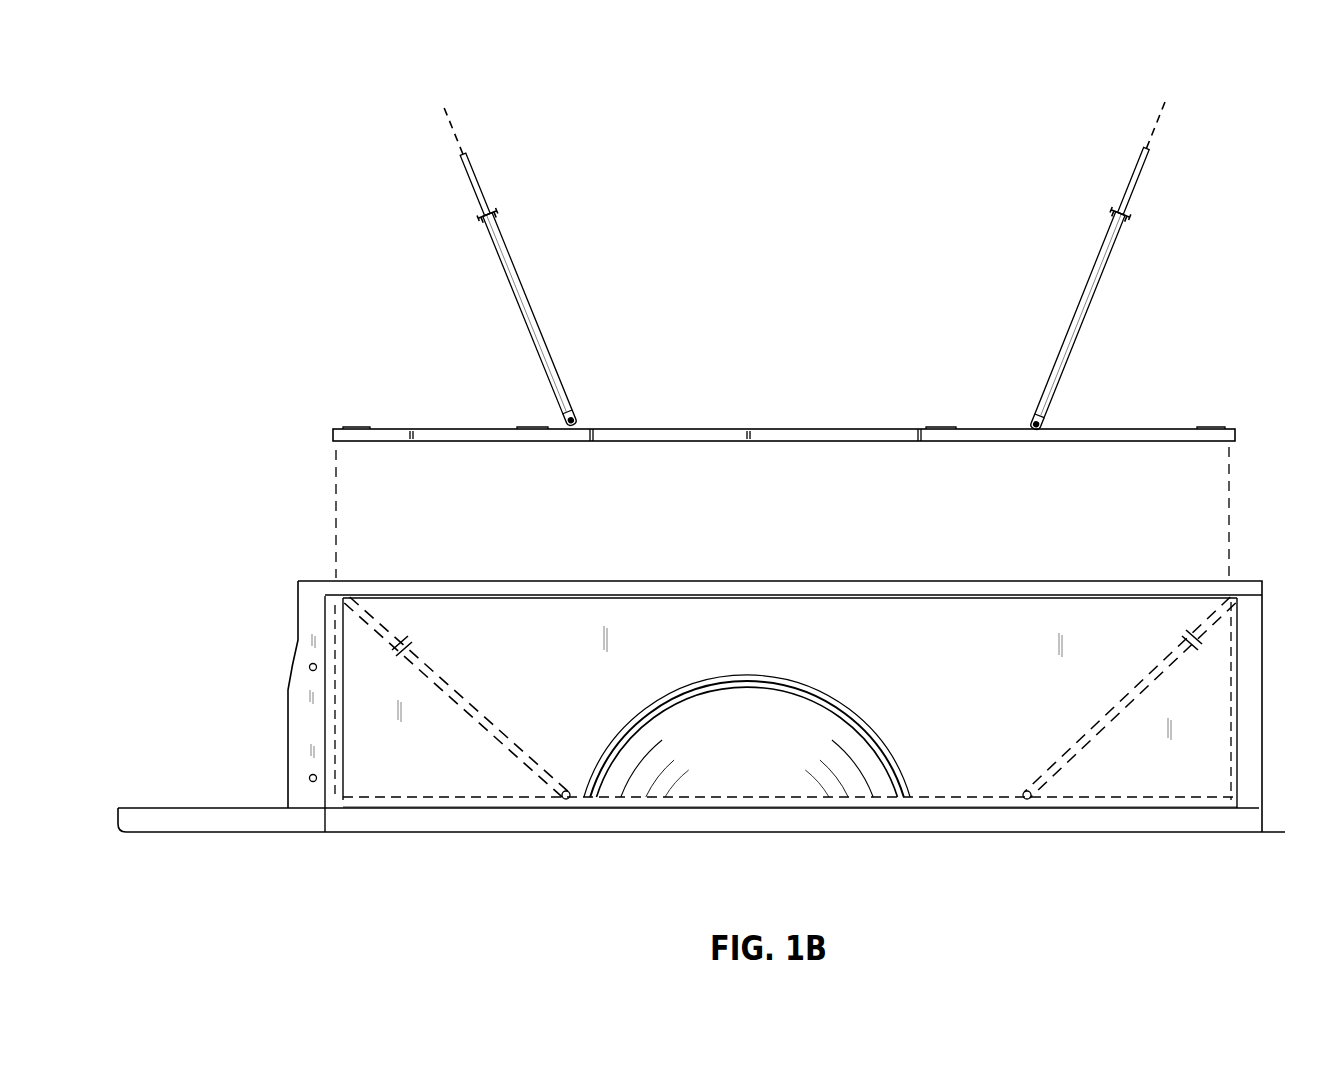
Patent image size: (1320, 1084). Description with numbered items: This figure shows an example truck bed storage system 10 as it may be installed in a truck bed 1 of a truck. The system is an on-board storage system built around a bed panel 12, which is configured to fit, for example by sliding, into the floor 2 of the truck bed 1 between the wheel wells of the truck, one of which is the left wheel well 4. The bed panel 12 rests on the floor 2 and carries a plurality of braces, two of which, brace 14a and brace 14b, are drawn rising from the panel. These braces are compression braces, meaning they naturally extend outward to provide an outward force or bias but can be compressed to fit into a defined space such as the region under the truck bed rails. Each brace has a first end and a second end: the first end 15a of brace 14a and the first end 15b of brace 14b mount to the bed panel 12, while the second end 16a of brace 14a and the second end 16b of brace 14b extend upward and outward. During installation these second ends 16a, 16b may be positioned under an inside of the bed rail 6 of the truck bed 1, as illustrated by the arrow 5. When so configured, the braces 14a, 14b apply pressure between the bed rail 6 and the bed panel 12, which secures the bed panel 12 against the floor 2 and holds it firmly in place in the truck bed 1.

The truck bed 1 is at (312, 478).
The floor 2 is at (457, 822).
The left wheel well 4 is at (820, 690).
The arrow 5 is at (560, 610).
The bed rail 6 is at (530, 580).
The truck bed storage system 10 is at (896, 132).
The bed panel 12 is at (776, 428).
The brace 14a is at (543, 320).
The brace 14b is at (1080, 288).
The first end 15a is at (578, 410).
The first end 15b is at (1030, 410).
The second end 16a is at (482, 178).
The second end 16b is at (1137, 180).